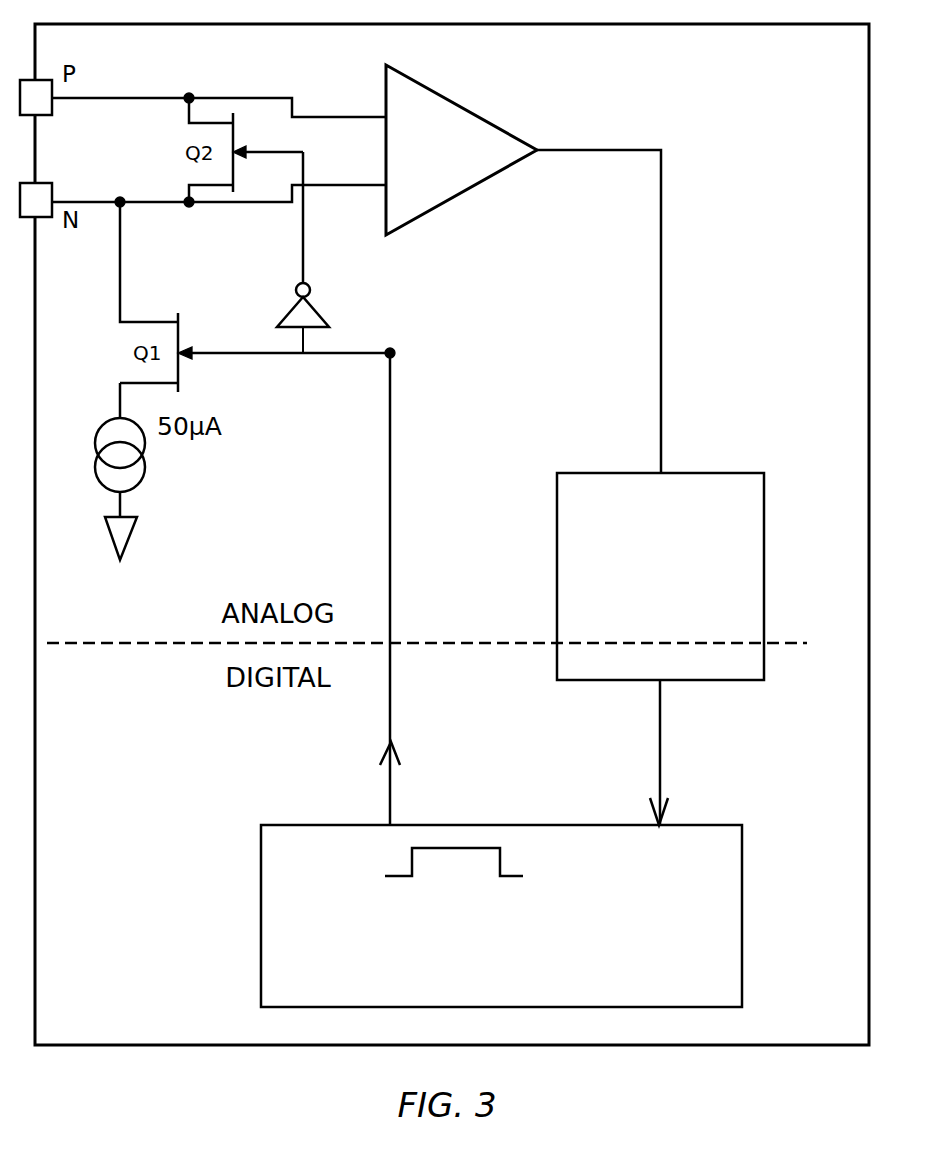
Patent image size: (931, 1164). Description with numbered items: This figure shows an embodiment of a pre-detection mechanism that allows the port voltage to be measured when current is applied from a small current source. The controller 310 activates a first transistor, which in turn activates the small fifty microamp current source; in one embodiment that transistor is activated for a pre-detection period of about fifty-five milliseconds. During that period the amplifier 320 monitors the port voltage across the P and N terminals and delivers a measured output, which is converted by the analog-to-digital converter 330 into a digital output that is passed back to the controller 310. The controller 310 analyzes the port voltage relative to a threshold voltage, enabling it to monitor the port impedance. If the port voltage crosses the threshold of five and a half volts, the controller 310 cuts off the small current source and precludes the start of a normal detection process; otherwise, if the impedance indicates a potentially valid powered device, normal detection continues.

The controller 310 is at (742, 917).
The amplifier 320 is at (474, 115).
The analog-to-digital converter 330 is at (764, 575).